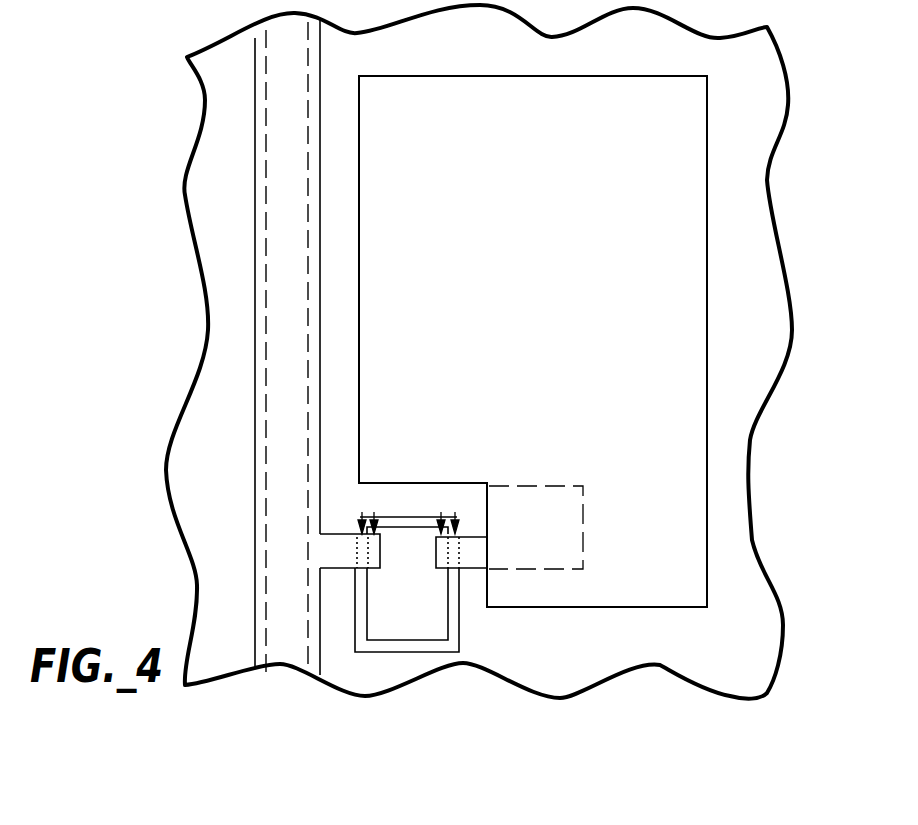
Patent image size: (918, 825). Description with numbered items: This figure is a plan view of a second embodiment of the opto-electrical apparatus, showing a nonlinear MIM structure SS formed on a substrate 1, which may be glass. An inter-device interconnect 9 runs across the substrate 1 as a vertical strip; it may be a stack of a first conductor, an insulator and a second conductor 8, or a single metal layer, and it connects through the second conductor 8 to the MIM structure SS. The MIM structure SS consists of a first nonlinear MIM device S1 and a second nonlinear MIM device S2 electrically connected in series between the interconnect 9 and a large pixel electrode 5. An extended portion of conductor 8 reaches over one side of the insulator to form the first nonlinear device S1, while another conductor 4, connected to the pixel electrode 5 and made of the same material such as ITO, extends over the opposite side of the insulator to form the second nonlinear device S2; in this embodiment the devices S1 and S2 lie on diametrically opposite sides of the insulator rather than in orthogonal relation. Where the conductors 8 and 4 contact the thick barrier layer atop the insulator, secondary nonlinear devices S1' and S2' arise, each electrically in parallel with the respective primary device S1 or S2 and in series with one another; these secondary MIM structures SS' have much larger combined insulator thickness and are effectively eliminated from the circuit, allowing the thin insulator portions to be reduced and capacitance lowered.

The substrate 1 is at (747, 180).
The pixel electrode 5 is at (685, 285).
The second conductor 8 is at (282, 310).
The inter-device interconnect 9 is at (256, 234).
The second conductor 4 is at (478, 565).
The MIM structure SS is at (408, 477).
The secondary MIM structures SS' is at (407, 496).
The first nonlinear MIM device S1 is at (328, 624).
The second nonlinear MIM device S2 is at (443, 629).
The secondary nonlinear device S1' is at (388, 570).
The secondary nonlinear device S2' is at (426, 584).